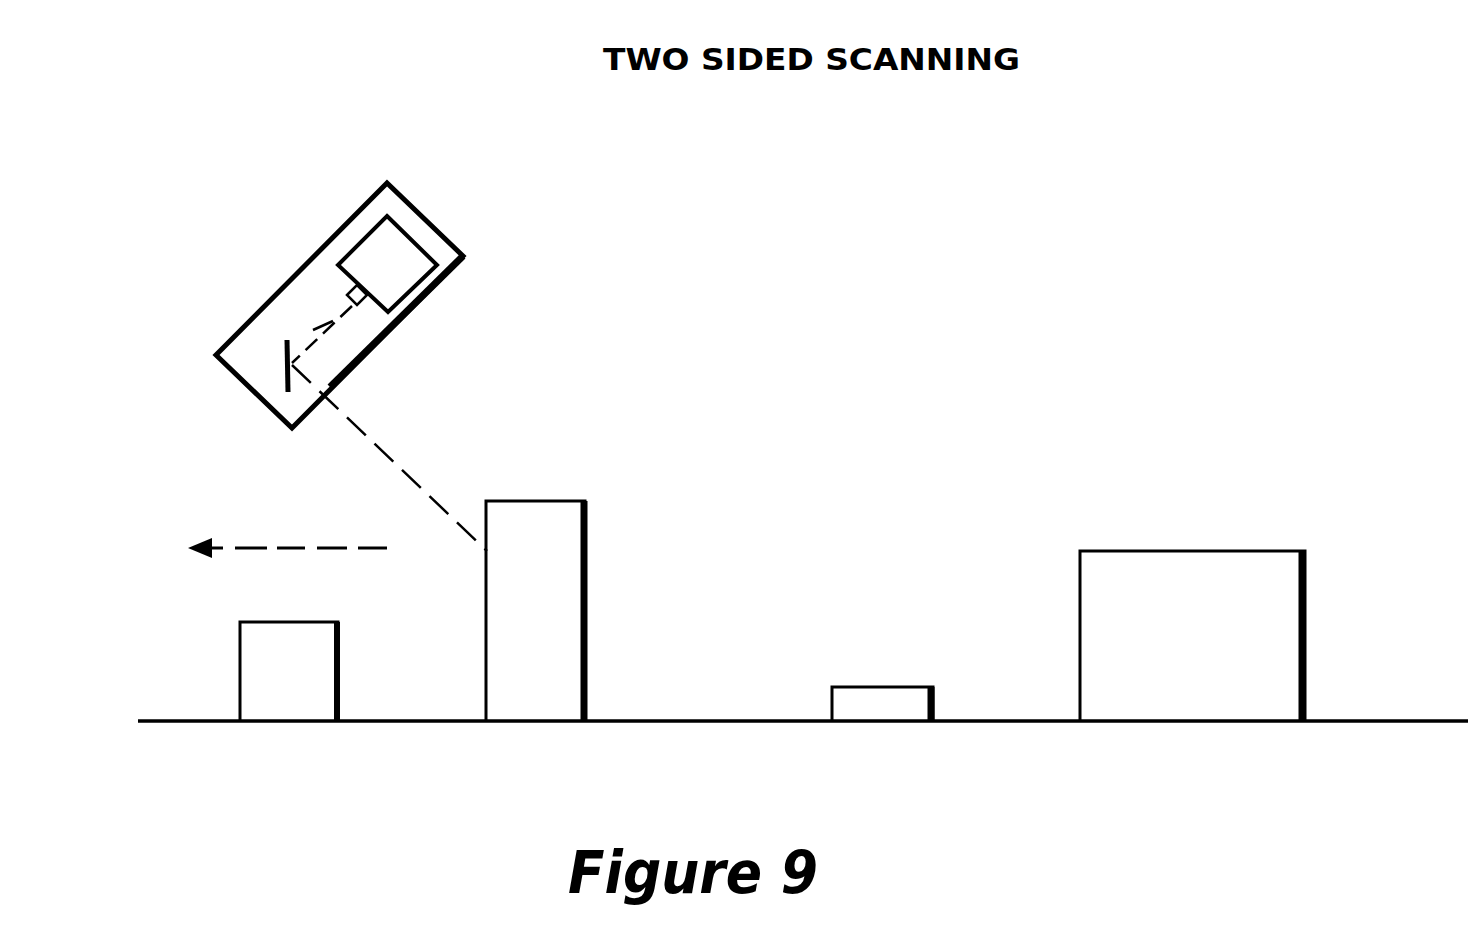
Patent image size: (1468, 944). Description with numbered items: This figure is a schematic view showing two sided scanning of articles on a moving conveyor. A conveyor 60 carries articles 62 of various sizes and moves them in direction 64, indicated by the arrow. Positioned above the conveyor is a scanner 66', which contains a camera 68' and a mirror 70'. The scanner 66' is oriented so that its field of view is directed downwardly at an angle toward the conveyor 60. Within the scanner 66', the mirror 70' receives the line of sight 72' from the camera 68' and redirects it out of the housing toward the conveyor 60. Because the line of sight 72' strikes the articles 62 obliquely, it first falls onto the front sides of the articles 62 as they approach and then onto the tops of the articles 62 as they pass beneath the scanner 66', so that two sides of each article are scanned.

The conveyor 60 is at (1374, 722).
The articles 62 is at (1078, 623).
The direction 64 is at (263, 551).
The scanner 66' is at (388, 305).
The camera 68' is at (409, 217).
The mirror 70' is at (215, 326).
The line of sight 72' is at (350, 362).